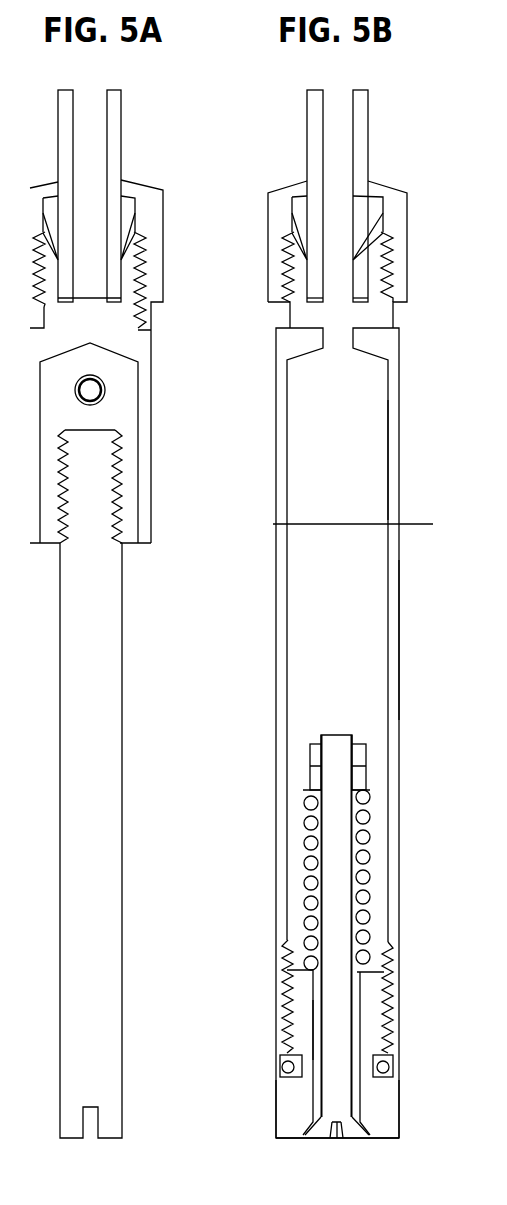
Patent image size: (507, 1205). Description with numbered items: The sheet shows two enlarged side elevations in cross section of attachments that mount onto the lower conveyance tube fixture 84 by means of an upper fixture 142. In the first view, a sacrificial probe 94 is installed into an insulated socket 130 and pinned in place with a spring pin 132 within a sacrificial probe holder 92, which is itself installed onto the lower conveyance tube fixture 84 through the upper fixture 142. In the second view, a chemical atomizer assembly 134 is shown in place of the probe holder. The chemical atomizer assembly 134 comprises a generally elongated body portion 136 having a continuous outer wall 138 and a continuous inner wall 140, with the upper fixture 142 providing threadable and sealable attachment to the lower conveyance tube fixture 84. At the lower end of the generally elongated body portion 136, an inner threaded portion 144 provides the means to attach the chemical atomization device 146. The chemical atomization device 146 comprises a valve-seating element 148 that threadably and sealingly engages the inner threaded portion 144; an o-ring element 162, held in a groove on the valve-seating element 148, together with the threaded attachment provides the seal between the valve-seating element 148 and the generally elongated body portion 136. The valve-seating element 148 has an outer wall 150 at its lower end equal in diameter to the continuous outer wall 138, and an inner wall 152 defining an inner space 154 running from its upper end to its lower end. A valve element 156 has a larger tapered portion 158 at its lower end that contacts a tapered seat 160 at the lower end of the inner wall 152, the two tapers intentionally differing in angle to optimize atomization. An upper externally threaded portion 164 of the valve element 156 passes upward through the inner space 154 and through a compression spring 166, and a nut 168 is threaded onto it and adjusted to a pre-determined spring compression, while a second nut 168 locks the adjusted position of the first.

In FIG. 5A, the lower conveyance tube fixture 84 is at (155, 178).
In FIG. 5B, the lower conveyance tube fixture 84 is at (273, 178).
In FIG. 5A, the upper fixture 142 is at (124, 316).
In FIG. 5B, the upper fixture 142 is at (306, 316).
In FIG. 5A, the spring pin 132 is at (112, 390).
In FIG. 5A, the sacrificial probe holder 92 is at (165, 463).
In FIG. 5A, the insulated socket 130 is at (130, 544).
In FIG. 5A, the sacrificial probe 94 is at (92, 763).
In FIG. 5B, the chemical atomizer assembly 134 is at (379, 733).
In FIG. 5B, the generally elongated body portion 136 is at (402, 643).
In FIG. 5B, the continuous outer wall 138 is at (258, 547).
In FIG. 5B, the continuous inner wall 140 is at (366, 488).
In FIG. 5B, the valve element 156 is at (336, 928).
In FIG. 5B, the nut 168 is at (369, 756).
In FIG. 5B, the upper externally threaded portion 164 is at (320, 852).
In FIG. 5B, the compression spring 166 is at (372, 875).
In FIG. 5B, the inner threaded portion 144 is at (369, 953).
In FIG. 5B, the inner space 154 is at (316, 987).
In FIG. 5B, the valve-seating element 148 is at (390, 1017).
In FIG. 5B, the inner wall 152 is at (327, 1047).
In FIG. 5B, the o-ring element 162 is at (283, 1068).
In FIG. 5B, the outer wall 150 is at (273, 1108).
In FIG. 5B, the chemical atomization device 146 is at (258, 1137).
In FIG. 5B, the tapered seat 160 is at (372, 1116).
In FIG. 5B, the larger tapered portion 158 is at (364, 1141).